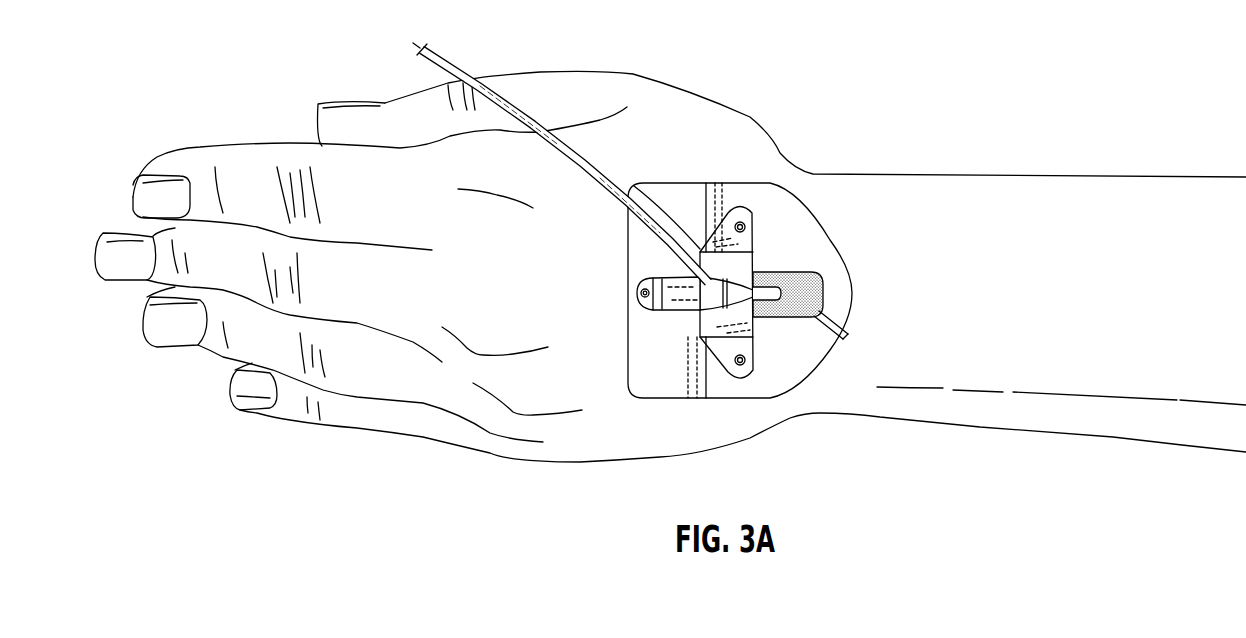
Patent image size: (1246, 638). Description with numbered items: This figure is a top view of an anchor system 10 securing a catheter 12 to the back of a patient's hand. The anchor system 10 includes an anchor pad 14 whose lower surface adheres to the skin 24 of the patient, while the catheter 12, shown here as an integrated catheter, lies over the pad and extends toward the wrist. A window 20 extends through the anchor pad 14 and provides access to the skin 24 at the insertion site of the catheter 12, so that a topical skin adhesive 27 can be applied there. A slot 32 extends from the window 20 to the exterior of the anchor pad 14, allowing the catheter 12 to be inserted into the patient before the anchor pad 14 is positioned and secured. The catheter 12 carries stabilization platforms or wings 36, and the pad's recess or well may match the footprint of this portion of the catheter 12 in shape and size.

The anchor system 10 is at (676, 176).
The catheter 12 is at (700, 303).
The anchor pad 14 is at (847, 254).
The window 20 is at (824, 285).
The skin 24 is at (627, 437).
The topical skin adhesive 27 is at (832, 318).
The slot 32 is at (840, 320).
The wings 36 is at (747, 238).